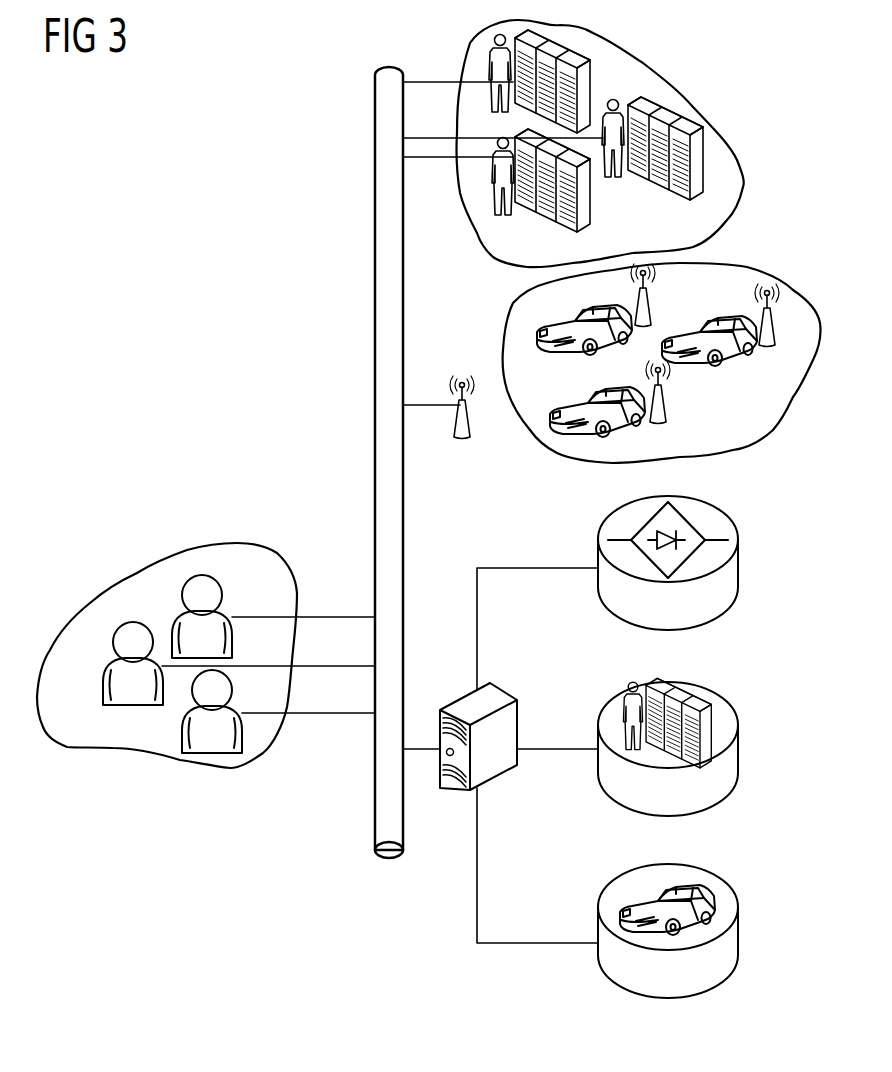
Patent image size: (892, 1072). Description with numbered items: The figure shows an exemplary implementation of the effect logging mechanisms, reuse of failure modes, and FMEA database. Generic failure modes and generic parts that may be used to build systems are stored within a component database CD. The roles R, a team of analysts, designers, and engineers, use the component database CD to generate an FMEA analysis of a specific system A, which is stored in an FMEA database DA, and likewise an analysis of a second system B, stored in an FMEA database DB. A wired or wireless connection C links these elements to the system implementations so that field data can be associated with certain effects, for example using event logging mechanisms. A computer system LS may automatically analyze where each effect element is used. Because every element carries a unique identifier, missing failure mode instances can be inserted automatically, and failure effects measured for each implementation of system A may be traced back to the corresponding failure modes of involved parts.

The system A is at (643, 63).
The system B is at (805, 287).
The roles R is at (145, 572).
The wired or wireless connection C is at (403, 505).
The computer system LS is at (517, 718).
The component database CD is at (738, 558).
The FMEA database DA is at (738, 755).
The FMEA database DB is at (738, 937).